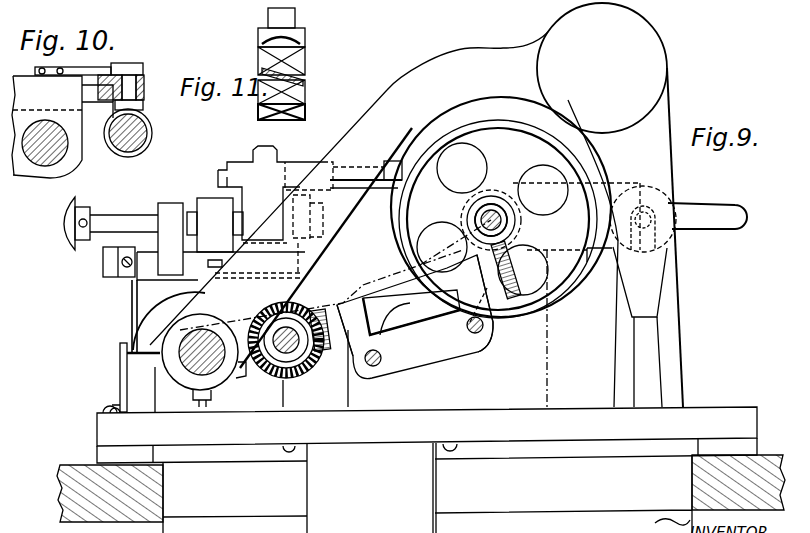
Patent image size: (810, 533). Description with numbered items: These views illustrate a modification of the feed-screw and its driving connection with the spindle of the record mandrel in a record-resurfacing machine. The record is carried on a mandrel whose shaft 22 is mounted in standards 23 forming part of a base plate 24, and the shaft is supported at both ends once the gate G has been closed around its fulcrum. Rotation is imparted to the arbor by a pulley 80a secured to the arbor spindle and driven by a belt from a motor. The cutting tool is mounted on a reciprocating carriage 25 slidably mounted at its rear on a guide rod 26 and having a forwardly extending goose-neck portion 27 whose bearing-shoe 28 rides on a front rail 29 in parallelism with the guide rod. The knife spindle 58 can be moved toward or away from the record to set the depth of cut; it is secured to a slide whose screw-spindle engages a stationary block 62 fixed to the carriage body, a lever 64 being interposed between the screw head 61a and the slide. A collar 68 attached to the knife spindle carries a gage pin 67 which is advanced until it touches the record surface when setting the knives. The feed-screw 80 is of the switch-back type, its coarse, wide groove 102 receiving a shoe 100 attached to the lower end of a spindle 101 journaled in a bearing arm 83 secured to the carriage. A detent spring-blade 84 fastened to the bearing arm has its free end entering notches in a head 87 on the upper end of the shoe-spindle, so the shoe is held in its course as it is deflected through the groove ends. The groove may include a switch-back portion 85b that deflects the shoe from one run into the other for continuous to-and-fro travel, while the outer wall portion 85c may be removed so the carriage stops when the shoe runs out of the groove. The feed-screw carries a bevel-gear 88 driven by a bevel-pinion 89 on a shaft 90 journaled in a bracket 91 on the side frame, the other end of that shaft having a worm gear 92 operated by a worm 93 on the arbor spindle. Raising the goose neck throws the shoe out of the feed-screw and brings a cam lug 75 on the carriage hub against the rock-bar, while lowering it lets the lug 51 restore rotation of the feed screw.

In FIG. 9, the shaft 22 is at (494, 207).
In FIG. 9, the standards 23 is at (548, 345).
In FIG. 9, the base plate 24 is at (497, 417).
In FIG. 10, the reciprocating carriage 25 is at (35, 118).
In FIG. 9, the guide rod 26 is at (180, 358).
In FIG. 9, the goose-neck portion 27 is at (435, 62).
In FIG. 9, the bearing-shoe 28 is at (653, 286).
In FIG. 9, the front rail 29 is at (645, 357).
In FIG. 9, the lug 51 is at (205, 404).
In FIG. 9, the spindle 58 is at (122, 222).
In FIG. 9, the screw head 61a is at (104, 270).
In FIG. 9, the stationary block 62 is at (221, 239).
In FIG. 9, the lever 64 is at (132, 309).
In FIG. 9, the gage pin 67 is at (391, 161).
In FIG. 9, the collar 68 is at (292, 166).
In FIG. 9, the cam lug 75 is at (165, 380).
In FIG. 11, the feed-screw 80 is at (305, 53).
In FIG. 9, the feed-screw 80 is at (278, 354).
In FIG. 9, the pulley 80a is at (558, 292).
In FIG. 10, the bearing arm 83 is at (97, 100).
In FIG. 10, the detent spring-blade 84 is at (95, 68).
In FIG. 11, the switch-back portion 85b is at (300, 36).
In FIG. 11, the outer wall portion 85c is at (278, 30).
In FIG. 10, the head 87 is at (143, 68).
In FIG. 9, the bevel-gear 88 is at (316, 354).
In FIG. 9, the bevel-pinion 89 is at (330, 298).
In FIG. 9, the shaft 90 is at (392, 303).
In FIG. 9, the bracket 91 is at (480, 344).
In FIG. 9, the worm gear 92 is at (518, 258).
In FIG. 9, the worm 93 is at (507, 221).
In FIG. 10, the shoe 100 is at (143, 108).
In FIG. 10, the spindle 101 is at (140, 86).
In FIG. 10, the groove 102 is at (153, 133).
In FIG. 11, the groove 102 is at (305, 93).
In FIG. 9, the gate G is at (594, 250).